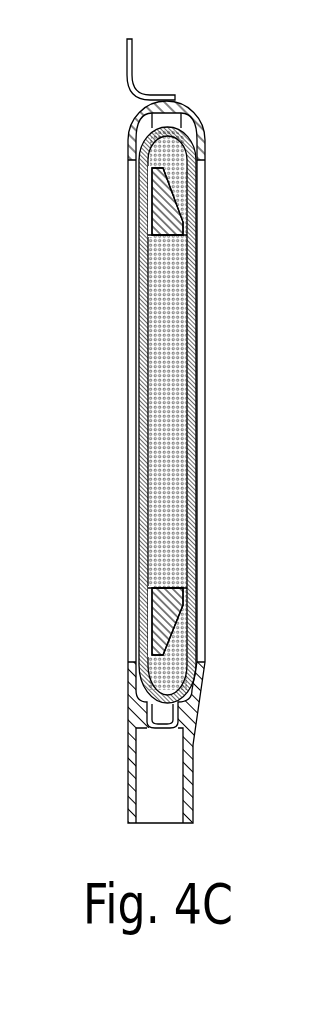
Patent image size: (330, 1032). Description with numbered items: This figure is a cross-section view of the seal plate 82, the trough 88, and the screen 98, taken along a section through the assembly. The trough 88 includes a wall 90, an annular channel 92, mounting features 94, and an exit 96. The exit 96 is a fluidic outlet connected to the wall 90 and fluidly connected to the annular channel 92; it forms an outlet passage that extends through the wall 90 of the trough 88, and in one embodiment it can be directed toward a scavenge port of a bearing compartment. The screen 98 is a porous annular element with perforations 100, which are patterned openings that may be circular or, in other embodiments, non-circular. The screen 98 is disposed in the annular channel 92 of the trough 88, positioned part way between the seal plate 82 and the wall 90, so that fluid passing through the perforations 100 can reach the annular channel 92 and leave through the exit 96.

The seal plate 82 is at (152, 603).
The trough 88 is at (199, 127).
The wall 90 is at (126, 128).
The annular channel 92 is at (189, 112).
The mounting features 94 is at (134, 52).
The exit 96 is at (128, 758).
The screen 98 is at (183, 637).
The perforations 100 is at (192, 694).